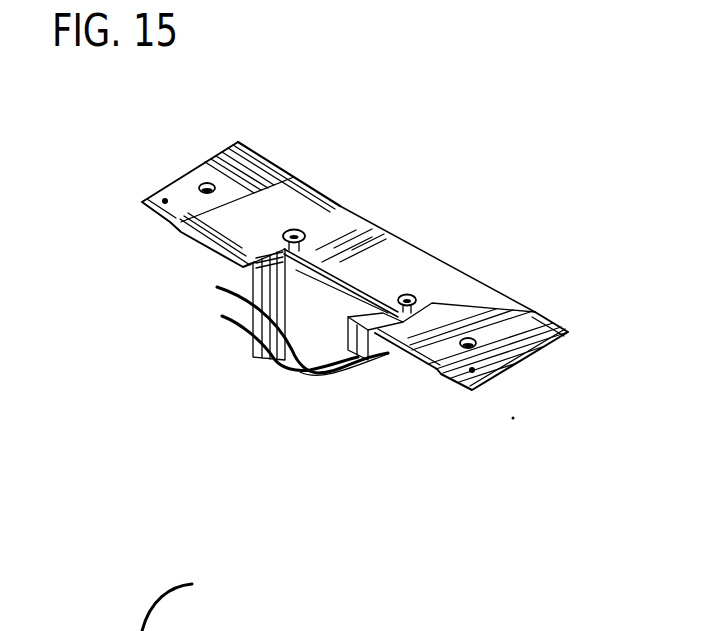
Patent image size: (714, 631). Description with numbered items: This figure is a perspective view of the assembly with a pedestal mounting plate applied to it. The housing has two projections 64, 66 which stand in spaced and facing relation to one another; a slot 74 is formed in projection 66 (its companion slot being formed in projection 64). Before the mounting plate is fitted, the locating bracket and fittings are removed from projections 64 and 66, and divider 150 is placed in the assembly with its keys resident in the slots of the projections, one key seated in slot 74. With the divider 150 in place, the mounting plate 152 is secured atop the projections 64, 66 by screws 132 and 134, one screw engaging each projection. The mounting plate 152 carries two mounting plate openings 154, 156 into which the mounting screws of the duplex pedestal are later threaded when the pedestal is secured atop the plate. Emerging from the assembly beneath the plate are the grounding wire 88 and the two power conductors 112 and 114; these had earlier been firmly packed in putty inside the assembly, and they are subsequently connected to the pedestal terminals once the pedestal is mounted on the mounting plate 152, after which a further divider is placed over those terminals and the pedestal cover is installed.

The projection 64 is at (497, 310).
The projection 66 is at (293, 292).
The slot 74 is at (322, 272).
The grounding wire 88 is at (217, 288).
The power conductor 112 is at (222, 318).
The power conductor 114 is at (387, 355).
The screw 132 is at (292, 229).
The screw 134 is at (407, 294).
The divider 150 is at (334, 328).
The mounting plate 152 is at (500, 298).
The mounting plate opening 154 is at (165, 200).
The mounting plate opening 156 is at (483, 363).